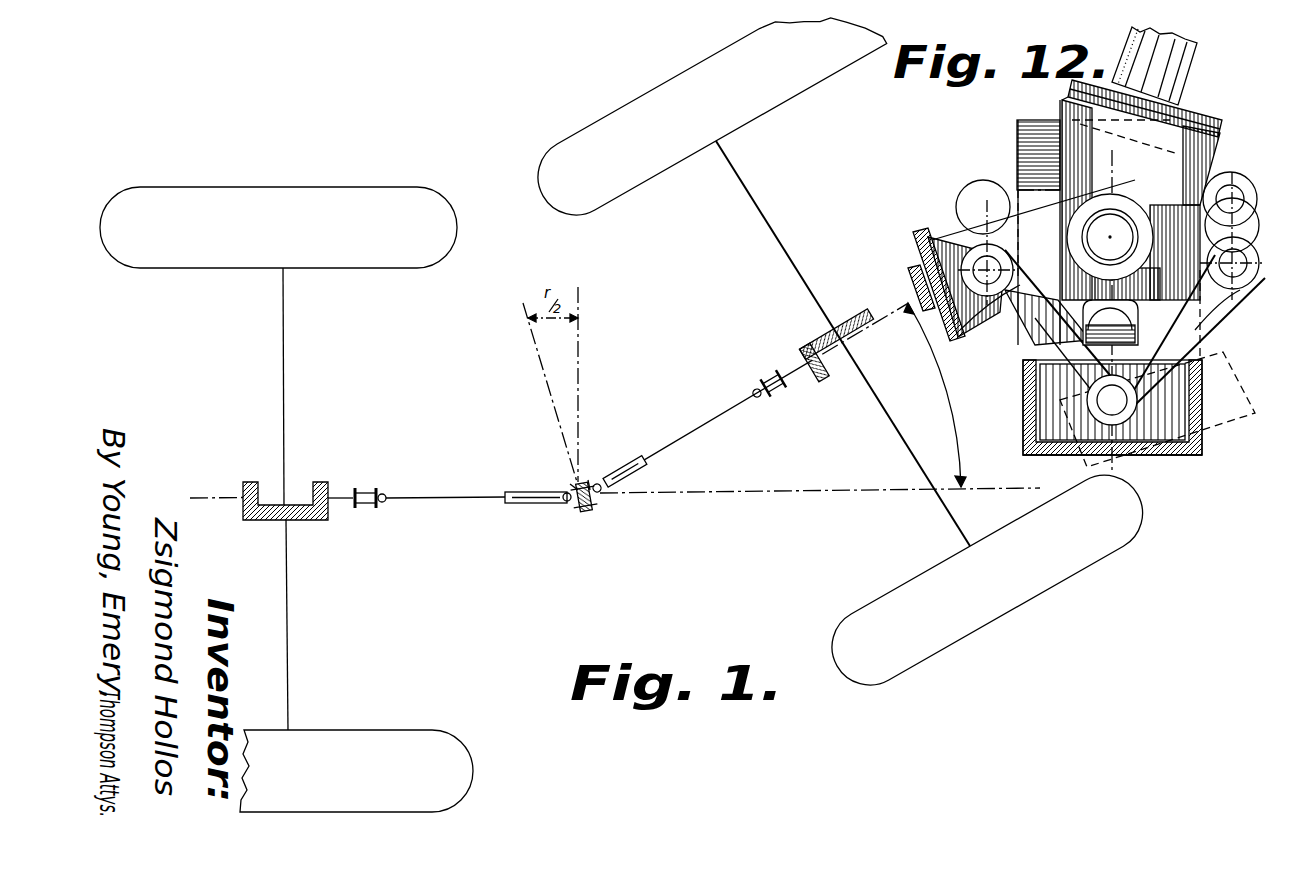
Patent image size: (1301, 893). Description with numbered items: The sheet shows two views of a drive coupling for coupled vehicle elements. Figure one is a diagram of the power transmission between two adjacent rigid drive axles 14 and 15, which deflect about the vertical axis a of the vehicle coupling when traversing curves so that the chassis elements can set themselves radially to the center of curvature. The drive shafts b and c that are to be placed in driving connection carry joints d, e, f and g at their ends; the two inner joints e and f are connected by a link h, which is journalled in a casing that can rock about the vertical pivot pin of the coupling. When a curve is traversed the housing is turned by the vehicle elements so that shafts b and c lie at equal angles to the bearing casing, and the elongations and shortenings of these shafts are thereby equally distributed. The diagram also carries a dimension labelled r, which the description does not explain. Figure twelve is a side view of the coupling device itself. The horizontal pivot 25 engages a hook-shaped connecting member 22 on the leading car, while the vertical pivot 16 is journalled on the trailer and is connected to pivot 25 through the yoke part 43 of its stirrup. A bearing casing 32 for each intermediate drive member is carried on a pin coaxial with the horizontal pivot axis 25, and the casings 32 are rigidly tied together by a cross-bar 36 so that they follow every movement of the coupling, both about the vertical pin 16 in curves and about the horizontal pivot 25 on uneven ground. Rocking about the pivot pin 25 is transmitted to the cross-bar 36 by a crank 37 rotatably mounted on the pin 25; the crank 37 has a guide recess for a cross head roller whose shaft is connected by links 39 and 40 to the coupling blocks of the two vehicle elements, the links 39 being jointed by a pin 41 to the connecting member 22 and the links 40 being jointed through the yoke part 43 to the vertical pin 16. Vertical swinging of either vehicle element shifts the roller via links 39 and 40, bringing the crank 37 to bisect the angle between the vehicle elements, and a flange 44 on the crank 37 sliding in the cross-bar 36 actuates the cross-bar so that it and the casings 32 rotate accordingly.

In FIG. 1, the drive axle 14 is at (283, 393).
In FIG. 1, the drive axle 15 is at (776, 240).
In FIG. 1, the vertical axis a is at (582, 508).
In FIG. 1, the drive shaft b is at (466, 496).
In FIG. 1, the drive shaft c is at (712, 420).
In FIG. 1, the joint d is at (384, 493).
In FIG. 1, the inner joint e is at (574, 492).
In FIG. 1, the inner joint f is at (615, 478).
In FIG. 1, the joint g is at (759, 398).
In FIG. 1, the link h is at (584, 480).
In FIG. 1, the radius r is at (935, 395).
In FIG. 12, the vertical pivot pin 16 is at (1170, 88).
In FIG. 12, the hook-shaped connecting member 22 is at (1045, 330).
In FIG. 12, the horizontal pivot pin 25 is at (1108, 232).
In FIG. 12, the bearing casing 32 is at (1018, 128).
In FIG. 12, the cross-bar 36 is at (1023, 421).
In FIG. 12, the crank 37 is at (1150, 222).
In FIG. 12, the link 39 is at (1010, 345).
In FIG. 12, the link 40 is at (1205, 345).
In FIG. 12, the pin 41 is at (978, 254).
In FIG. 12, the yoke part 43 is at (1193, 172).
In FIG. 12, the flange 44 is at (1062, 458).